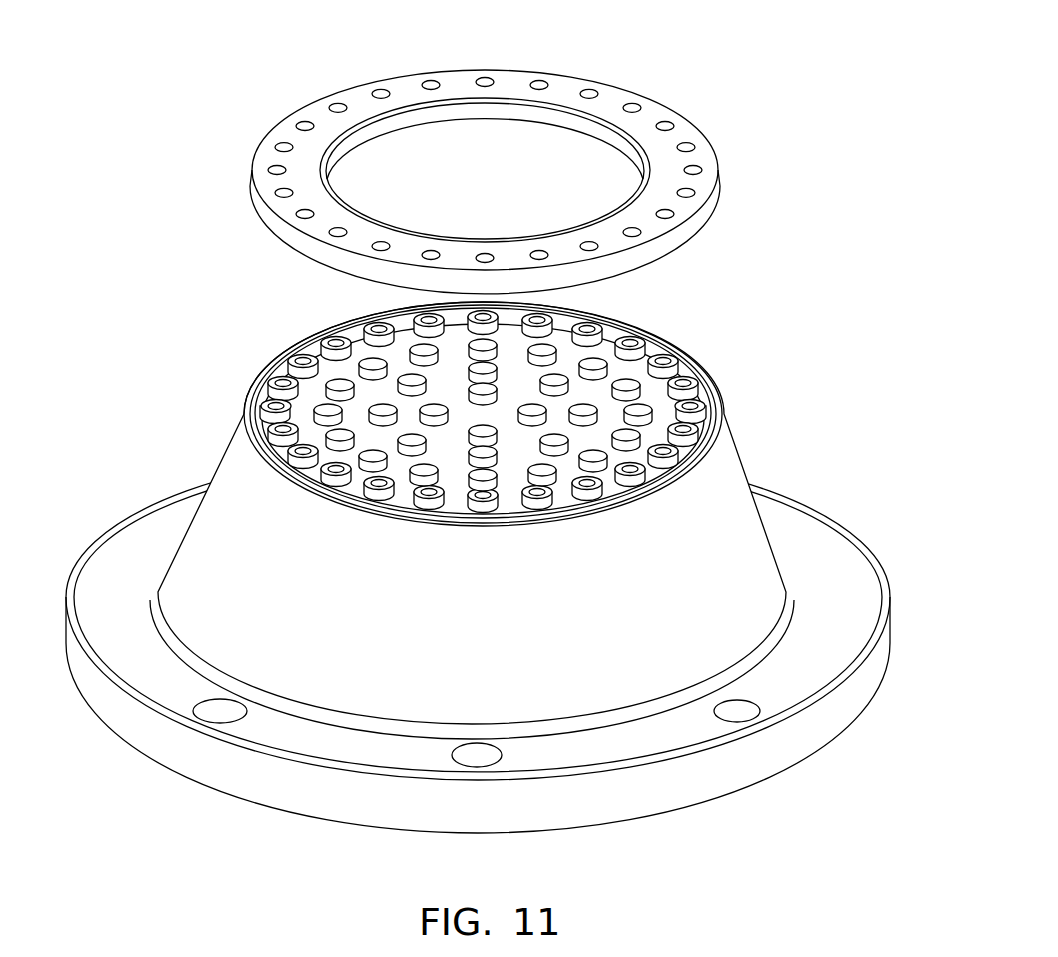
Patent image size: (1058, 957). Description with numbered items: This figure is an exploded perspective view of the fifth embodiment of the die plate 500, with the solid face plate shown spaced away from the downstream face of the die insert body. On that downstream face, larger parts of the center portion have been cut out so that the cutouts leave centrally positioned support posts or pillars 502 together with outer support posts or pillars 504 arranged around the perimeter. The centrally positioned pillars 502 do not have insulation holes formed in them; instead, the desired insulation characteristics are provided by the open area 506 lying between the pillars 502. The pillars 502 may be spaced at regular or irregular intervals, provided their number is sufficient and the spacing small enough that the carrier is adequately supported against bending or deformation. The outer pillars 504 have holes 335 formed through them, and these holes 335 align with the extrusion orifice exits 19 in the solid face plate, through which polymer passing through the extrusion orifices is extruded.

The die plate 500 is at (699, 68).
The extrusion orifice exits 19 is at (550, 77).
The centrally positioned support posts or pillars 502 is at (643, 368).
The holes 335 is at (300, 362).
The outer support posts or pillars 504 is at (273, 393).
The open area 506 is at (514, 442).